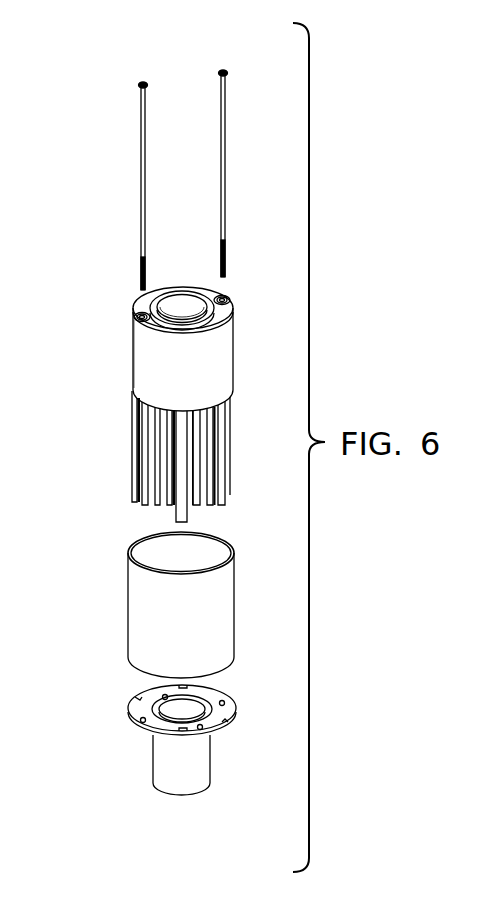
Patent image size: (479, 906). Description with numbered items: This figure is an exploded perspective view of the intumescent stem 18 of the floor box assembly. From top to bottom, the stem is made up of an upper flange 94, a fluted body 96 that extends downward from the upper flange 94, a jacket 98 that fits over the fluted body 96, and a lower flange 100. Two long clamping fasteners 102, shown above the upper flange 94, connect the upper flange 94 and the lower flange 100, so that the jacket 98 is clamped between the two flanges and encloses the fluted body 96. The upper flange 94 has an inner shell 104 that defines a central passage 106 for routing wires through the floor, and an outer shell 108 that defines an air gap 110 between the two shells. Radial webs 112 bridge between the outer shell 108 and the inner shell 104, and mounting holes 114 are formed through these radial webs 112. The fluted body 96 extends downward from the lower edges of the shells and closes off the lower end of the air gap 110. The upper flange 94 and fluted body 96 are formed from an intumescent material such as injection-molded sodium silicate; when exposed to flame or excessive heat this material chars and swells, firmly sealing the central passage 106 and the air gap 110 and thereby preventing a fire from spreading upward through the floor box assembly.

The intumescent stem 18 is at (94, 205).
The upper flange 94 is at (237, 369).
The fluted body 96 is at (236, 456).
The jacket 98 is at (220, 623).
The lower flange 100 is at (195, 760).
The clamping fasteners 102 is at (219, 160).
The inner shell 104 is at (205, 291).
The central passage 106 is at (182, 292).
The outer shell 108 is at (150, 374).
The air gap 110 is at (141, 300).
The radial webs 112 is at (142, 333).
The mounting holes 114 is at (138, 317).